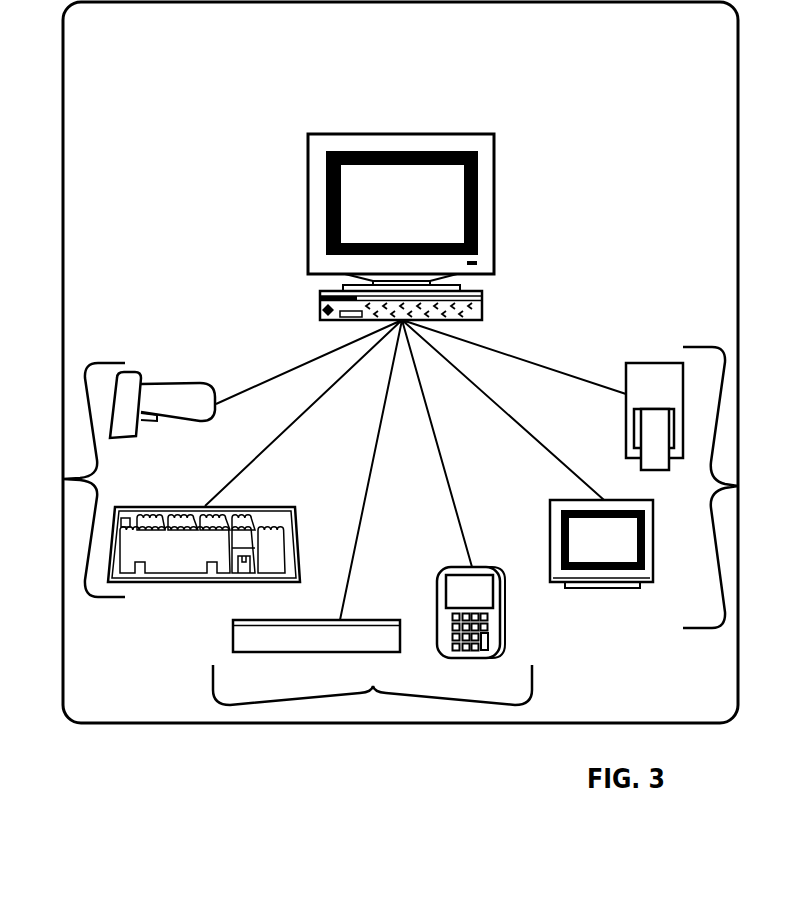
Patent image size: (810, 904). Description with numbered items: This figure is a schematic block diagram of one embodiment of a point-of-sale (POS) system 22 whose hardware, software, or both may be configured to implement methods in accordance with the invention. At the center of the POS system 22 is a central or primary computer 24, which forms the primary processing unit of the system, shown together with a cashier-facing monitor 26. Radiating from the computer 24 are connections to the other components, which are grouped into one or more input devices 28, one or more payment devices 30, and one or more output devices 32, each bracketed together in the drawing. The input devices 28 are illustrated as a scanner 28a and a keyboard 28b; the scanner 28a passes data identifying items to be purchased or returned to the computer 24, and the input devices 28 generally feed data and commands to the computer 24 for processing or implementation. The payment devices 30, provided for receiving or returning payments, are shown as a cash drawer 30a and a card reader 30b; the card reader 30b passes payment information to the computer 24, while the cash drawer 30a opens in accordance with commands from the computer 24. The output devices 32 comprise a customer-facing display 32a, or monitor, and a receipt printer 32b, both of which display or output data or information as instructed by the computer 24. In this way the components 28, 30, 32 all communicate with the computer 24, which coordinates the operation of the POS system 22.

The POS system 22 is at (575, 60).
The computer 24 is at (510, 286).
The monitor 26 is at (288, 170).
The input devices 28 is at (62, 478).
The scanner 28a is at (177, 403).
The keyboard 28b is at (271, 517).
The payment devices 30 is at (373, 693).
The cash drawer 30a is at (317, 637).
The card reader 30b is at (462, 571).
The output devices 32 is at (740, 486).
The customer-facing display 32a is at (598, 552).
The receipt printer 32b is at (645, 385).